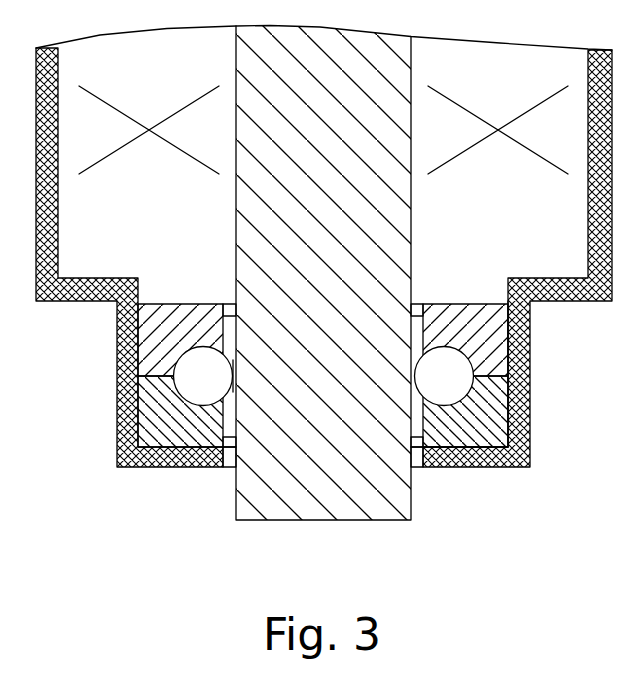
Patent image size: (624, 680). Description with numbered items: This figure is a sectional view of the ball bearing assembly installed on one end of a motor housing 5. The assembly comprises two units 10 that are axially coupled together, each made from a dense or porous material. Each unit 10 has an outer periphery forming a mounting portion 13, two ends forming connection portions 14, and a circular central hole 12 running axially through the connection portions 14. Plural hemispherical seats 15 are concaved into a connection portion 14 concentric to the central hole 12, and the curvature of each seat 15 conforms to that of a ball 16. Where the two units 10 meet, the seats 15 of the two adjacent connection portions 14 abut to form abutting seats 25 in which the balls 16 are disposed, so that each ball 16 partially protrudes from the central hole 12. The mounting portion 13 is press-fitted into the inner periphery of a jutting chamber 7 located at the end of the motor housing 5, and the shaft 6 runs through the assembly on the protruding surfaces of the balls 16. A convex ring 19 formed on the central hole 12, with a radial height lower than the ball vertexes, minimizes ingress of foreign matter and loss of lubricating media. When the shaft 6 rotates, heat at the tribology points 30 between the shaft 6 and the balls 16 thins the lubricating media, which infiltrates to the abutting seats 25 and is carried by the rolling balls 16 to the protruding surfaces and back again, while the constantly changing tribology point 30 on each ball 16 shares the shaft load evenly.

The motor housing 5 is at (46, 71).
The shaft 6 is at (320, 477).
The jutting chamber 7 is at (517, 378).
The unit 10 is at (488, 318).
The central hole 12 is at (449, 447).
The mounting portion 13 is at (511, 329).
The connection portion 14 is at (152, 370).
The hemispherical seat 15 is at (207, 332).
The ball 16 is at (198, 377).
The convex ring 19 is at (437, 452).
The abutting seat 25 is at (182, 367).
The tribology point 30 is at (237, 375).